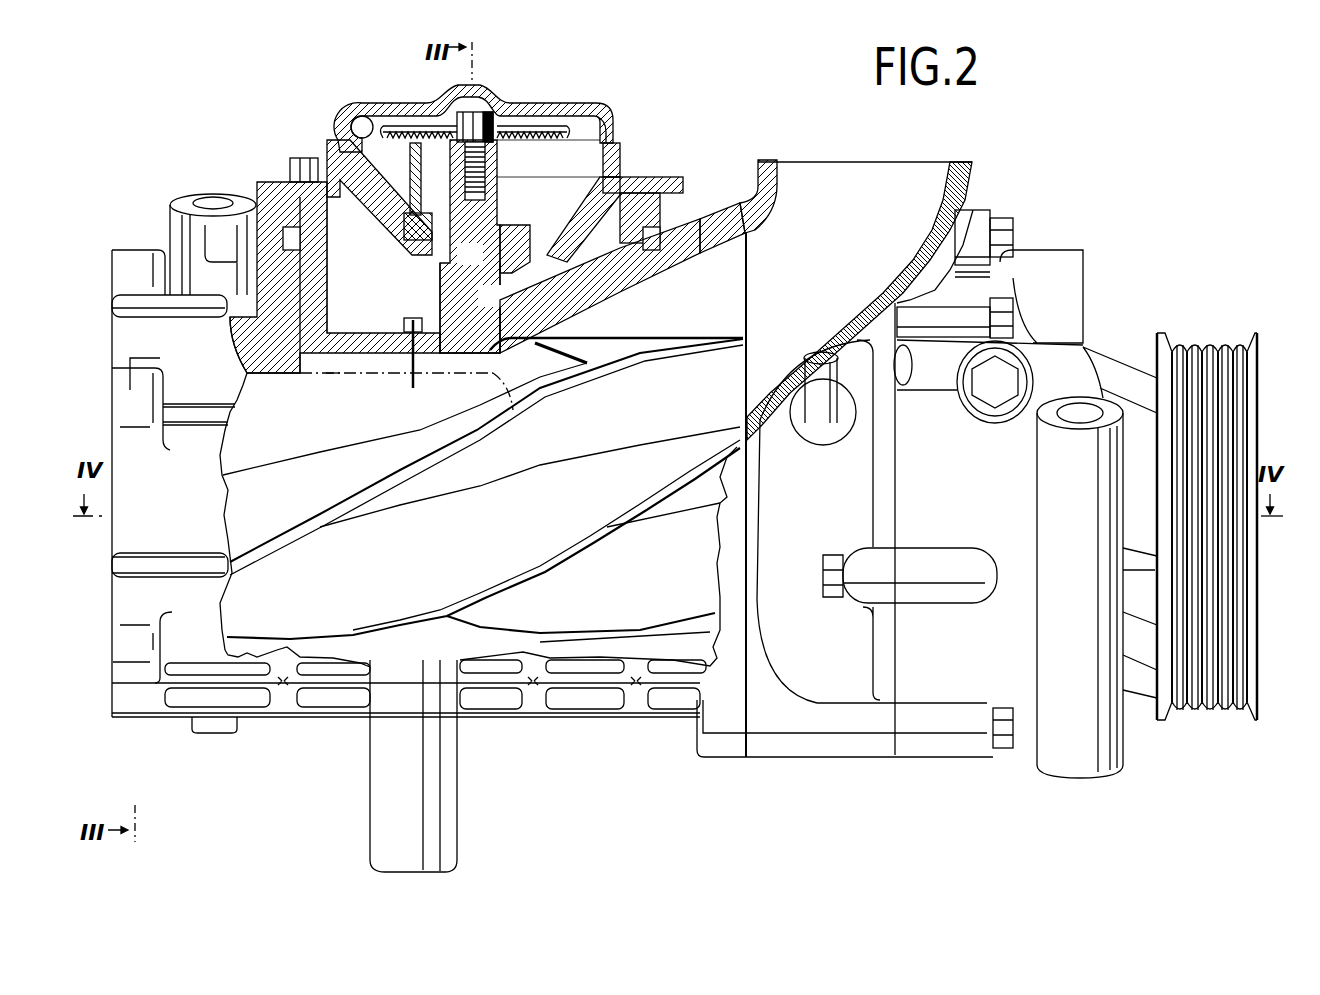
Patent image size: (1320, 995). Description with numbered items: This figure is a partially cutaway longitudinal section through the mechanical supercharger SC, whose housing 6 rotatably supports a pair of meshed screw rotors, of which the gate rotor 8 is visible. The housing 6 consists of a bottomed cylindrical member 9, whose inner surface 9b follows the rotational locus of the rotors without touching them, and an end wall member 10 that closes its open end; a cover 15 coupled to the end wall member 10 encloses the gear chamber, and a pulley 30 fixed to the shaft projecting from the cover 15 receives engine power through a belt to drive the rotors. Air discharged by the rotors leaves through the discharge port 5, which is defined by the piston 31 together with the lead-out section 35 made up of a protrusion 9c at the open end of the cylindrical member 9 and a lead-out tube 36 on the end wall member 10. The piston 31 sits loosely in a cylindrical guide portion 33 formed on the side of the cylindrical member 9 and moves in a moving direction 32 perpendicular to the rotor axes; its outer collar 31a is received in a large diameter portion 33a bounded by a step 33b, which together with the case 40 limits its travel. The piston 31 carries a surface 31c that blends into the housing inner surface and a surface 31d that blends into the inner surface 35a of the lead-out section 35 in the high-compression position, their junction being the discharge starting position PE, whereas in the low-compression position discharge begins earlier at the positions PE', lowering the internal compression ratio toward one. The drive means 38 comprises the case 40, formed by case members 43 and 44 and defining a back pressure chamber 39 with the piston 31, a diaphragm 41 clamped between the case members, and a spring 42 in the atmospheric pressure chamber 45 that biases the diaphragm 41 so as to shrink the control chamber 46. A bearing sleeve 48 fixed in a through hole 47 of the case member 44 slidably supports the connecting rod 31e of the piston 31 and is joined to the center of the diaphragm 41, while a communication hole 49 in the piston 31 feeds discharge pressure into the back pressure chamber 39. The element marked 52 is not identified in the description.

The discharge port 5 is at (712, 307).
The housing 6 is at (670, 755).
The gate rotor 8 is at (707, 585).
The cylindrical member 9 is at (603, 698).
The inner surface 9b is at (250, 380).
The protrusion 9c is at (708, 225).
The end wall member 10 is at (750, 679).
The cover 15 is at (1082, 356).
The pulley 30 is at (1160, 333).
The piston 31 is at (320, 270).
The collar 31a is at (285, 192).
The surface 31c is at (393, 360).
The surface 31d is at (555, 300).
The connecting rod 31e is at (512, 243).
The moving direction 32 is at (410, 332).
The cylindrical guide portion 33 is at (240, 200).
The large diameter portion 33a is at (250, 232).
The step 33b is at (303, 238).
The lead-out section 35 is at (772, 133).
The inner surface 35a is at (747, 255).
The lead-out tube 36 is at (752, 212).
The drive means 38 is at (536, 94).
The back pressure chamber 39 is at (385, 280).
The case 40 is at (627, 140).
The diaphragm 41 is at (343, 140).
The spring 42 is at (410, 198).
The case member 43 is at (604, 120).
The case member 44 is at (617, 172).
The atmospheric pressure chamber 45 is at (575, 184).
The control chamber 46 is at (488, 104).
The through hole 47 is at (495, 275).
The bearing sleeve 48 is at (470, 246).
The communication hole 49 is at (600, 268).
The pin 52 is at (372, 116).
The mechanical supercharger SC is at (1030, 216).
The discharge starting position PE is at (518, 402).
The discharge starting position PE' is at (322, 396).